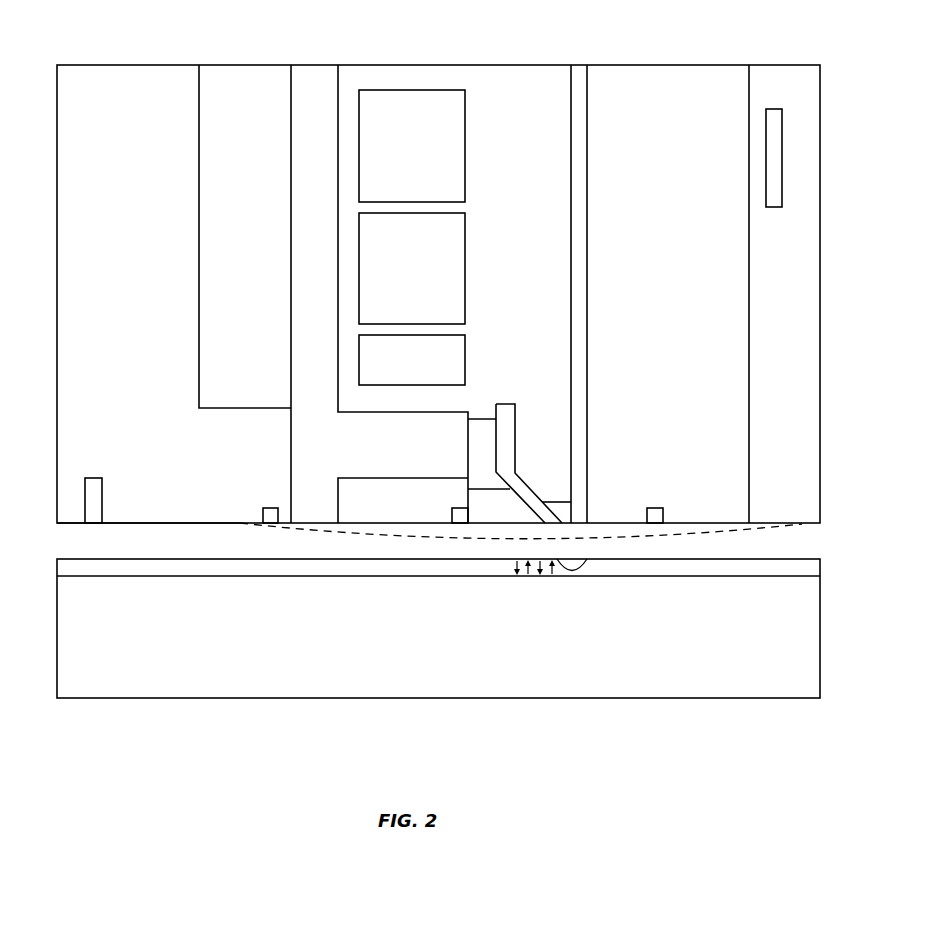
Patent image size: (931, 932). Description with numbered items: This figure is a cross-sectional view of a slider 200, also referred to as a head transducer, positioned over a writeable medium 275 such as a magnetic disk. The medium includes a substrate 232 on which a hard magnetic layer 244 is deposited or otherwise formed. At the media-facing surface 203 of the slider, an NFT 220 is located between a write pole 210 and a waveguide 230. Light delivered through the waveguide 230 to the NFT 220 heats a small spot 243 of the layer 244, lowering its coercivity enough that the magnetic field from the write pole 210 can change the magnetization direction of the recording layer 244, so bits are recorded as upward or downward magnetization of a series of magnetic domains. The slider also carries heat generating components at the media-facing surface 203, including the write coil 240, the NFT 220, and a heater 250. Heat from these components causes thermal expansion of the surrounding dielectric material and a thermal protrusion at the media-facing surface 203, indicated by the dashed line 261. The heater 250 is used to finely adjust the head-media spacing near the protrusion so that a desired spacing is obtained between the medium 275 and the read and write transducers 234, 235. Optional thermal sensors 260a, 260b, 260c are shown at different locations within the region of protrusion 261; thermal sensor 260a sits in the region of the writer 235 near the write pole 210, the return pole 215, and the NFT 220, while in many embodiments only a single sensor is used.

The slider 200 is at (98, 65).
The media-facing surface 203 is at (80, 524).
The write pole 210 is at (509, 405).
The return pole 215 is at (295, 428).
The NFT 220 is at (556, 510).
The waveguide 230 is at (587, 420).
The substrate 232 is at (438, 628).
The read transducer 234 is at (103, 495).
The write transducer 235 is at (172, 190).
The write coil 240 is at (455, 271).
The spot 243 is at (577, 577).
The hard magnetic layer 244 is at (820, 559).
The heater 250 is at (773, 208).
The thermal sensor 260a is at (455, 508).
The thermal sensor 260b is at (659, 508).
The thermal sensor 260c is at (265, 508).
The thermal protrusion 261 is at (722, 533).
The writeable medium 275 is at (218, 710).